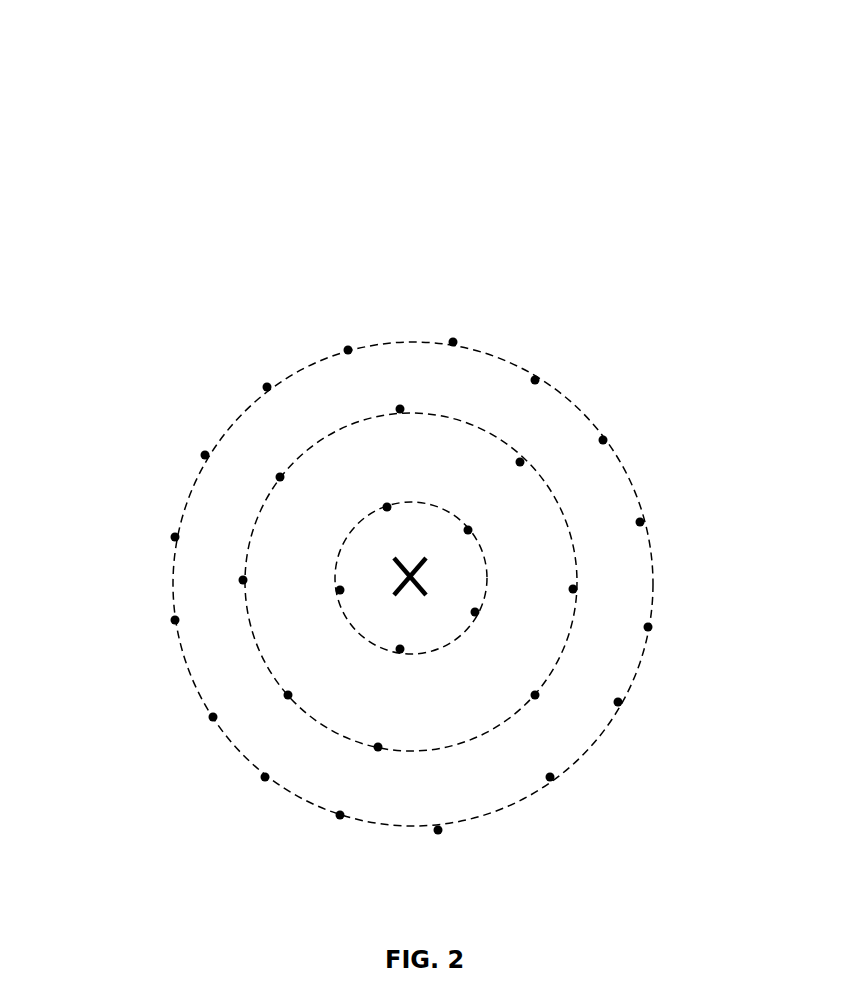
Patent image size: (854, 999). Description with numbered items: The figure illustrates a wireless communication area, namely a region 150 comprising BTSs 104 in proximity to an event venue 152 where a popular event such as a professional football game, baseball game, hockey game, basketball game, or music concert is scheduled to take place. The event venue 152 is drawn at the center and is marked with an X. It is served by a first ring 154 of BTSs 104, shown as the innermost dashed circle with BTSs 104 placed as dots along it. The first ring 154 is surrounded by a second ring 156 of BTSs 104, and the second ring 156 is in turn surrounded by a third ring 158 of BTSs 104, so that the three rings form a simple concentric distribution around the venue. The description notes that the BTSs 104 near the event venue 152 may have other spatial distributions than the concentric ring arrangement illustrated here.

The region 150 is at (405, 117).
The event venue 152 is at (403, 547).
The first ring 154 is at (434, 510).
The second ring 156 is at (495, 443).
The third ring 158 is at (592, 413).
The BTS 104 is at (175, 537).